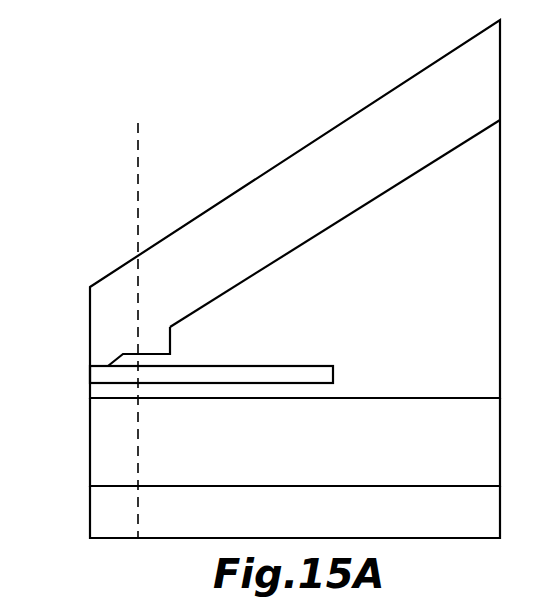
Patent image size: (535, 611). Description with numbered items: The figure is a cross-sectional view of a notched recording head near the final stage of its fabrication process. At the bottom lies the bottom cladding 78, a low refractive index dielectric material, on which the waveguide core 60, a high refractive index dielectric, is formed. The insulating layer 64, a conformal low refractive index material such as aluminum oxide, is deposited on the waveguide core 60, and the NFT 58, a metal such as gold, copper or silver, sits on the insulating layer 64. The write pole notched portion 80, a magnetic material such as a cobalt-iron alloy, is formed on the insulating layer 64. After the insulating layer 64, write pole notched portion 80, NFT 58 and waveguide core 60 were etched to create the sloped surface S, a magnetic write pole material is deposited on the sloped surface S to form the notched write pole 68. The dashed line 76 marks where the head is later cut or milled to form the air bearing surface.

The NFT 58 is at (90, 374).
The waveguide core 60 is at (90, 443).
The insulating layer 64 is at (295, 209).
The notched write pole 68 is at (335, 223).
The line 76 is at (138, 545).
The bottom cladding 78 is at (90, 512).
The write pole notched portion 80 is at (153, 349).
The sloped surface S is at (382, 193).